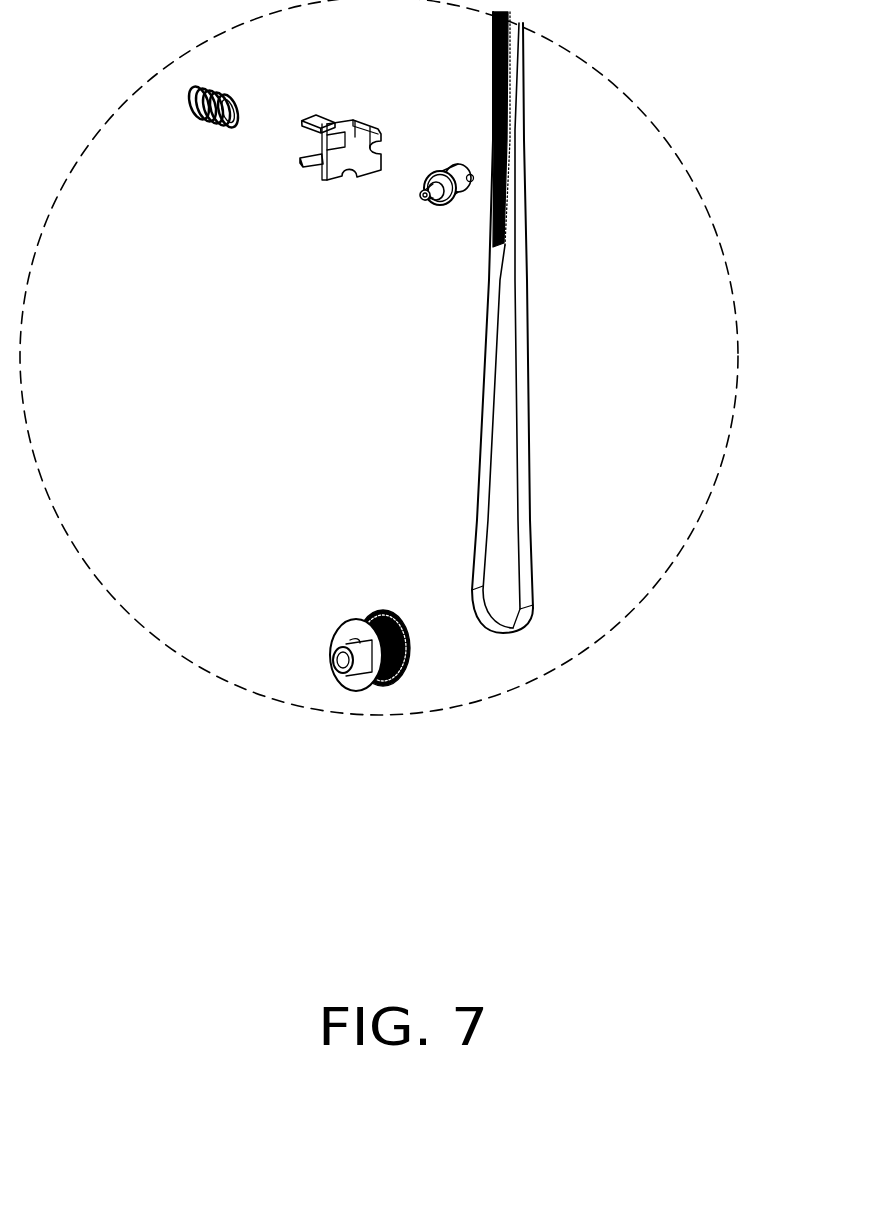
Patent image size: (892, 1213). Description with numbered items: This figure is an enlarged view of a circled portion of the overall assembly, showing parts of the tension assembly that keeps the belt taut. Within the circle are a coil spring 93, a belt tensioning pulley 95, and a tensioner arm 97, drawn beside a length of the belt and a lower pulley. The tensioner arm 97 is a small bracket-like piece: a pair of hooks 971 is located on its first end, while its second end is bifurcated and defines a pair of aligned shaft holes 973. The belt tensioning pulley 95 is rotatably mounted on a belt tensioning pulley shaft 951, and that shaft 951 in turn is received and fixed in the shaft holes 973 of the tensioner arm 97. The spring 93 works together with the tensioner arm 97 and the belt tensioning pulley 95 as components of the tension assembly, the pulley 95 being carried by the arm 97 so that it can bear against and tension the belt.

The spring 93 is at (193, 92).
The belt tensioning pulley 95 is at (434, 184).
The belt tensioning pulley shaft 951 is at (423, 199).
The tensioner arm 97 is at (297, 158).
The hooks 971 is at (330, 113).
The shaft holes 973 is at (337, 168).